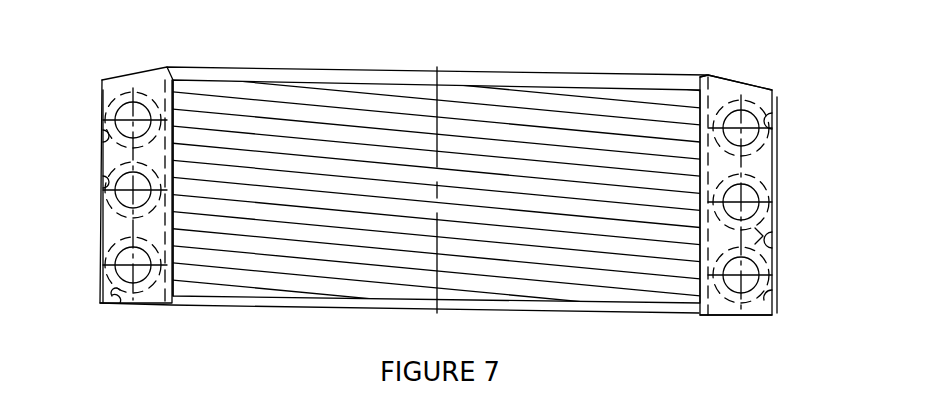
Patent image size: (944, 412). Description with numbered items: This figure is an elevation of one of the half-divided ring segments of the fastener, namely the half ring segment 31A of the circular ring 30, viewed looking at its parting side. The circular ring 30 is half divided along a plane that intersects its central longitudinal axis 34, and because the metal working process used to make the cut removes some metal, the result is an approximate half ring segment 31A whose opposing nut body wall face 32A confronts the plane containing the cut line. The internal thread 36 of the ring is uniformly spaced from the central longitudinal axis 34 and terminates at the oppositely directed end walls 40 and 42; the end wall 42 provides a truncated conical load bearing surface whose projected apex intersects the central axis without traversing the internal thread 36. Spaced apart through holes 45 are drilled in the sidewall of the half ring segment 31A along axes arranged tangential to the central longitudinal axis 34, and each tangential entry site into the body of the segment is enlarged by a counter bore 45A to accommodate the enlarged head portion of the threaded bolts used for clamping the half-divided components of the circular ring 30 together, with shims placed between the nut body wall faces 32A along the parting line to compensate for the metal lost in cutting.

The circular ring 30 is at (551, 62).
The half ring segment 31A is at (773, 143).
The nut body wall face 32A is at (153, 302).
The central longitudinal axis 34 is at (437, 133).
The internal thread 36 is at (357, 275).
The end wall 40 is at (752, 315).
The end wall 42 is at (722, 75).
The through hole 45 is at (145, 110).
The counter bore 45A is at (87, 173).